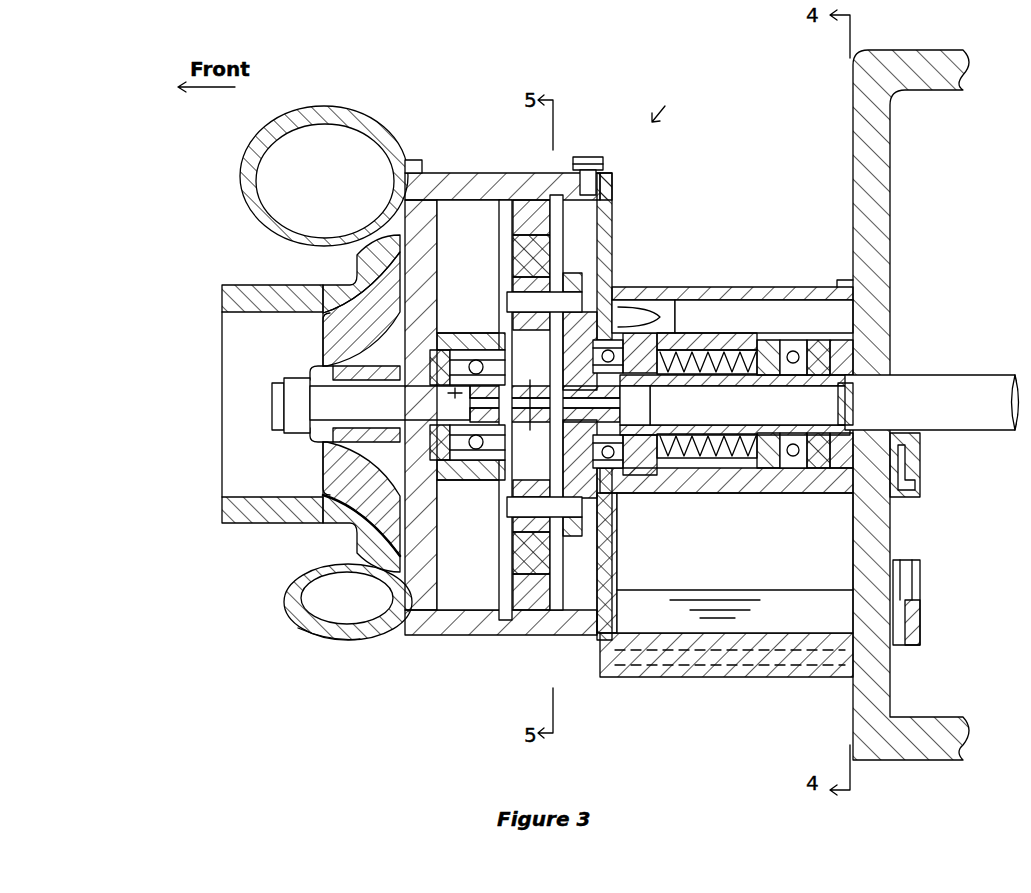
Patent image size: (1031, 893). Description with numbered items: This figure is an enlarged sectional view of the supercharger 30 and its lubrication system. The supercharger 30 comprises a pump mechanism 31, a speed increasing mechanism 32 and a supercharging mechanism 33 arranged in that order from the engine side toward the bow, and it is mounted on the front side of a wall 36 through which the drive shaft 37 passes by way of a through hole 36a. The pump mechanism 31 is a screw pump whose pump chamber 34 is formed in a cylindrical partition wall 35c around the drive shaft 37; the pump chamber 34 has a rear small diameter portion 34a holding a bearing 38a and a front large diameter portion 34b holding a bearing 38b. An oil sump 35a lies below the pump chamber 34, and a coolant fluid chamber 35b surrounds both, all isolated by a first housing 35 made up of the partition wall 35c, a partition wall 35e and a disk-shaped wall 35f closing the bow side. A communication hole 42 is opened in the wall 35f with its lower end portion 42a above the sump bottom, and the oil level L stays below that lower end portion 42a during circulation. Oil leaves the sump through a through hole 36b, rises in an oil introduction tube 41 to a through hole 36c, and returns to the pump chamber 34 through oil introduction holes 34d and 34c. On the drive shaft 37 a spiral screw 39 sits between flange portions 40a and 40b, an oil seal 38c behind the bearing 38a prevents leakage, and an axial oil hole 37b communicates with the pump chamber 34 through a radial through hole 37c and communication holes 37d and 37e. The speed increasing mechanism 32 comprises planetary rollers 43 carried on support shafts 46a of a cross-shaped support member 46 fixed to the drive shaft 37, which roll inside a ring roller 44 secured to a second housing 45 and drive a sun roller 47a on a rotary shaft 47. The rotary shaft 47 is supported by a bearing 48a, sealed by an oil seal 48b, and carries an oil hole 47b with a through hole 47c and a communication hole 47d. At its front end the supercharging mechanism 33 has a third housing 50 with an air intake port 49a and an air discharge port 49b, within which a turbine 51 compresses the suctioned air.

The supercharger 30 is at (700, 110).
The pump mechanism 31 is at (766, 249).
The speed increasing mechanism 32 is at (517, 157).
The supercharging mechanism 33 is at (257, 250).
The pump chamber 34 is at (680, 470).
The small diameter portion 34a is at (875, 352).
The large diameter portion 34b is at (645, 330).
The oil introduction hole 34c is at (759, 472).
The oil introduction hole 34d is at (808, 478).
The first housing 35 is at (619, 219).
The oil sump 35a is at (617, 640).
The coolant fluid chamber 35b is at (758, 660).
The partition wall 35c is at (702, 495).
The partition wall 35e is at (738, 290).
The wall 35f is at (612, 190).
The wall 36 is at (853, 150).
The through hole 36a is at (890, 432).
The through hole 36b is at (855, 625).
The through hole 36c is at (836, 487).
The drive shaft 37 is at (975, 374).
The oil hole 37b is at (720, 350).
The through hole 37c is at (705, 388).
The communication hole 37d is at (800, 397).
The communication hole 37e is at (633, 388).
The bearing 38a is at (795, 470).
The bearing 38b is at (612, 465).
The oil seal 38c is at (850, 385).
The screw 39 is at (730, 470).
The flange portion 40a is at (778, 336).
The flange portion 40b is at (678, 340).
The oil introduction tube 41 is at (920, 595).
The communication hole 42 is at (620, 530).
The lower end portion 42a is at (617, 578).
The planetary roller 43 is at (530, 250).
The ring roller 44 is at (510, 636).
The second housing 45 is at (448, 173).
The support member 46 is at (560, 520).
The support shaft 46a is at (568, 290).
The rotary shaft 47 is at (323, 370).
The sun roller 47a is at (510, 487).
The oil hole 47b is at (440, 405).
The through hole 47c is at (505, 300).
The communication hole 47d is at (465, 345).
The bearing 48a is at (478, 360).
The oil seal 48b is at (478, 458).
The air intake port 49a is at (222, 313).
The air discharge port 49b is at (345, 642).
The third housing 50 is at (254, 537).
The turbine 51 is at (333, 468).
The oil level L is at (788, 590).